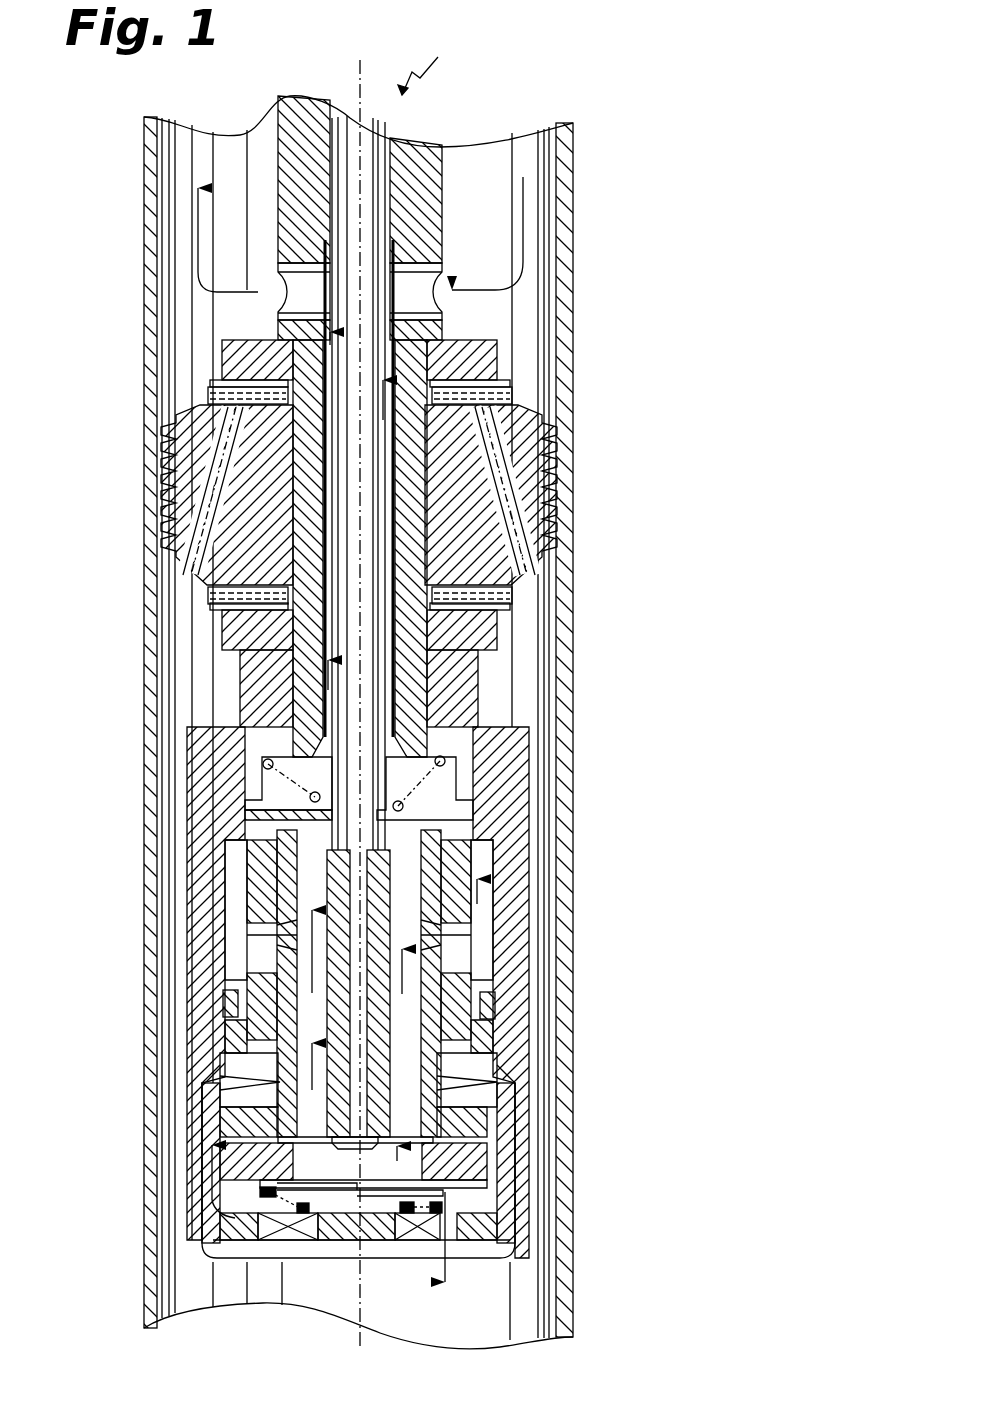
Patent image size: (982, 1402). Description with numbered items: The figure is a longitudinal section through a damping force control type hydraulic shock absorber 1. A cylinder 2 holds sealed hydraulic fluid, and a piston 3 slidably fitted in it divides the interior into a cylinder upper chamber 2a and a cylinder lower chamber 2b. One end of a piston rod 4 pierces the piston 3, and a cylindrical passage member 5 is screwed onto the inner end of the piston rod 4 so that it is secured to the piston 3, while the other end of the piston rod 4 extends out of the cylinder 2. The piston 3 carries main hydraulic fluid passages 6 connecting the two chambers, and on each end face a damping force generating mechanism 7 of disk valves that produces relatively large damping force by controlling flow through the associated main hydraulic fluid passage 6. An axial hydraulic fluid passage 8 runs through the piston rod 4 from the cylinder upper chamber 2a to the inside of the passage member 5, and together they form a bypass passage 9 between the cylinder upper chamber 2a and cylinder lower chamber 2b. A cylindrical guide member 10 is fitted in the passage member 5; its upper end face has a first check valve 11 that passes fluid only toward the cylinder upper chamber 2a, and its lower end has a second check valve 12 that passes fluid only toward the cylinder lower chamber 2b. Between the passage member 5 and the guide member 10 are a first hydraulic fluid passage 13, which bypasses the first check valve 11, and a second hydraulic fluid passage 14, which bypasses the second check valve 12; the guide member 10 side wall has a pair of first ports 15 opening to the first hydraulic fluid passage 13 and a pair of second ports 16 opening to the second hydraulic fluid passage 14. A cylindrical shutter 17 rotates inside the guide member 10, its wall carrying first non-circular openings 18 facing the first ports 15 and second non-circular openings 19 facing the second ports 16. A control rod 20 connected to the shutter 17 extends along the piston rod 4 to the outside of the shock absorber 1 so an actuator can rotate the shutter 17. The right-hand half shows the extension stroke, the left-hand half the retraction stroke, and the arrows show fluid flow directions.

The damping force control type hydraulic shock absorber 1 is at (459, 53).
The cylinder 2 is at (567, 252).
The cylinder upper chamber 2a is at (497, 158).
The cylinder lower chamber 2b is at (497, 1313).
The piston 3 is at (522, 513).
The piston rod 4 is at (290, 137).
The passage member 5 is at (505, 780).
The main hydraulic fluid passages 6 is at (523, 412).
The damping force generating mechanism 7 is at (210, 397).
The hydraulic fluid passage 8 is at (390, 503).
The bypass passage 9 is at (327, 490).
The guide member 10 is at (493, 1033).
The first check valve 11 is at (265, 793).
The second check valve 12 is at (260, 1215).
The first hydraulic fluid passage 13 is at (233, 898).
The second hydraulic fluid passage 14 is at (205, 1128).
The first ports 15 is at (253, 958).
The second ports 16 is at (300, 1082).
The shutter 17 is at (458, 905).
The first non-circular openings 18 is at (290, 940).
The second non-circular openings 19 is at (240, 1120).
The control rod 20 is at (362, 131).